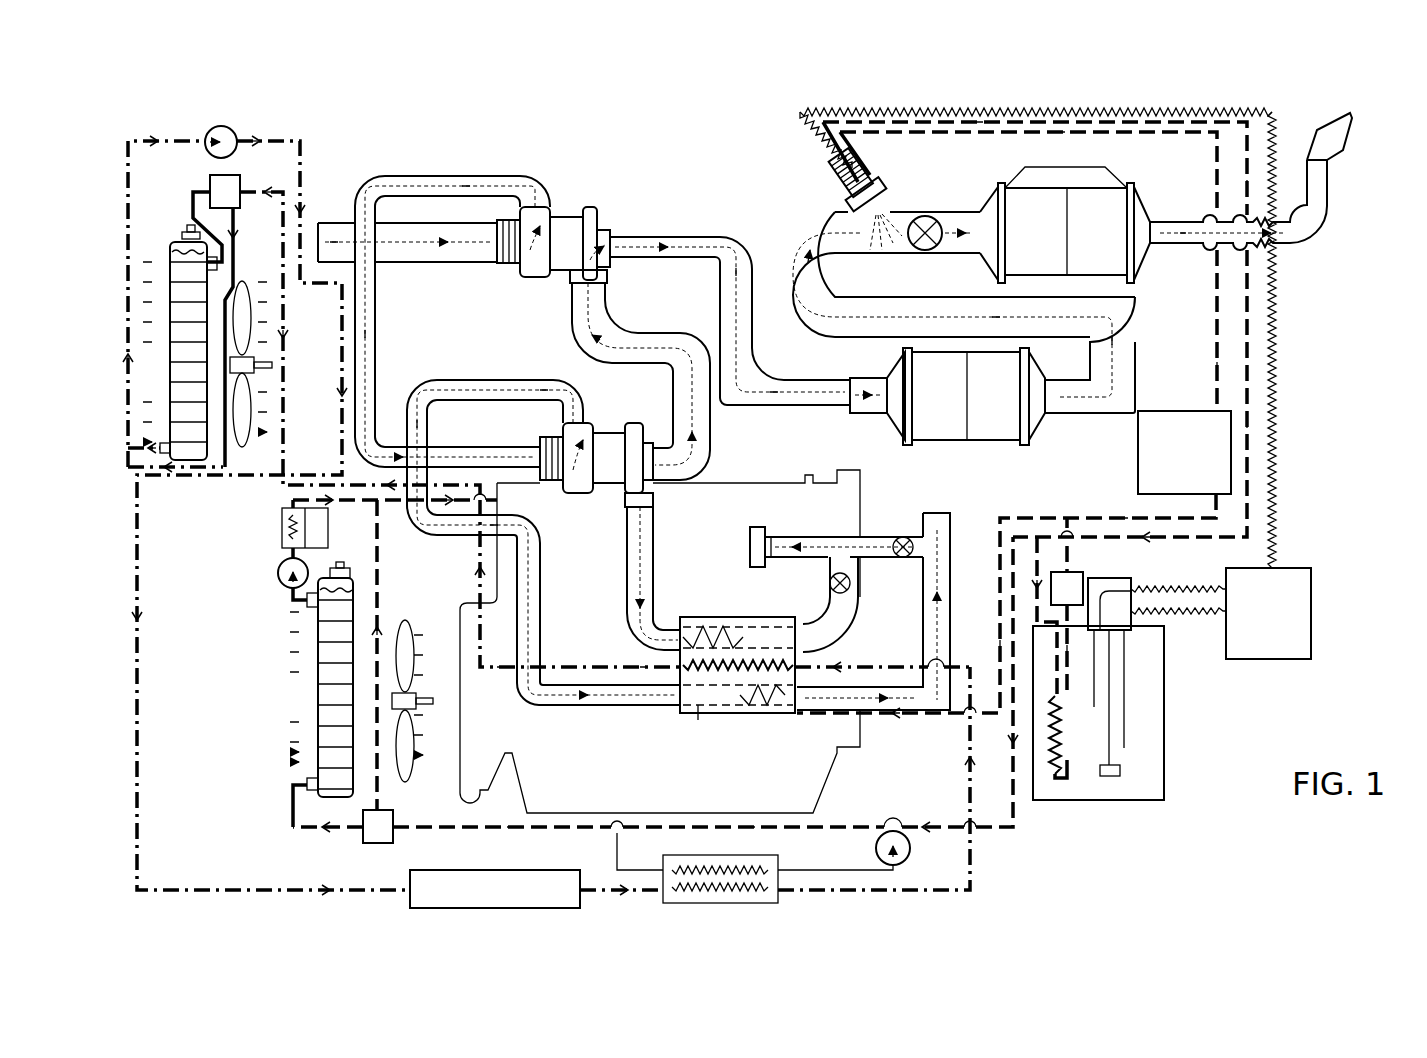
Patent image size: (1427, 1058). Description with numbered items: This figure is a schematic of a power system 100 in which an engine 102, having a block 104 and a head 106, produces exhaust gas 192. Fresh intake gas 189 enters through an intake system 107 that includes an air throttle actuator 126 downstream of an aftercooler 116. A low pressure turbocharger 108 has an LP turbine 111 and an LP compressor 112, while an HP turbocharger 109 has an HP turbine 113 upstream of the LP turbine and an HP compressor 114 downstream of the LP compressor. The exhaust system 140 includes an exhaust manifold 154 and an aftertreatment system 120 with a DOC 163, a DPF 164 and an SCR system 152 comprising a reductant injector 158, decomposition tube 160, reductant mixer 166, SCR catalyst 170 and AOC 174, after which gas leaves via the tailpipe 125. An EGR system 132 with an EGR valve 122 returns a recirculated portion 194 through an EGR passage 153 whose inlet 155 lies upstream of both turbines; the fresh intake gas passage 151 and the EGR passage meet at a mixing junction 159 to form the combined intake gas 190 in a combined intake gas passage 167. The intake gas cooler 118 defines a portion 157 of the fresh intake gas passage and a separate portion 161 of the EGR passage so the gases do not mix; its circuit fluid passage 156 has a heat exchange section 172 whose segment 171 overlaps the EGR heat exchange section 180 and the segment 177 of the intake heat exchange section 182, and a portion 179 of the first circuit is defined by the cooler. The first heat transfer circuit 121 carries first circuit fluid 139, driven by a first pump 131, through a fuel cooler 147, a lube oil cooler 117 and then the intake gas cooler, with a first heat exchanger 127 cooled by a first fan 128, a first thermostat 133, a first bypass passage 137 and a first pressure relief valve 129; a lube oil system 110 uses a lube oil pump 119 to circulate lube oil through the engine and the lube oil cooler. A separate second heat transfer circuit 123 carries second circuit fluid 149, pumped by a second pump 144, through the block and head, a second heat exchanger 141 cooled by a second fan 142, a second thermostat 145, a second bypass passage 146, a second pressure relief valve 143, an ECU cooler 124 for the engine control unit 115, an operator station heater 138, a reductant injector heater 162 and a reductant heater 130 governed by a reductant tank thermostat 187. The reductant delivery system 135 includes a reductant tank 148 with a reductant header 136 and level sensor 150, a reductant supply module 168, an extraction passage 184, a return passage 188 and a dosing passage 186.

The power system 100 is at (995, 860).
The engine 102 is at (785, 458).
The block 104 is at (870, 615).
The head 106 is at (860, 485).
The intake system 107 is at (378, 165).
The turbocharger 108 is at (570, 205).
The HP turbocharger 109 is at (610, 420).
The lube oil system 110 is at (583, 847).
The LP turbine 111 is at (600, 210).
The LP compressor 112 is at (538, 205).
The HP turbine 113 is at (636, 425).
The HP compressor 114 is at (580, 495).
The engine control unit 115 is at (328, 528).
The aftercooler 116 is at (950, 650).
The lube oil cooler 117 is at (765, 856).
The intake gas cooler 118 is at (750, 617).
The lube oil pump 119 is at (905, 858).
The aftertreatment system 120 is at (1150, 288).
The first heat transfer circuit 121 is at (178, 128).
The EGR valve 122 is at (830, 590).
The second heat transfer circuit 123 is at (298, 745).
The ECU cooler 124 is at (282, 520).
The tailpipe 125 is at (1340, 160).
The air throttle actuator 126 is at (903, 537).
The first heat exchanger 127 is at (185, 367).
The first fan 128 is at (248, 285).
The first pressure relief valve 129 is at (205, 242).
The reductant heater 130 is at (1055, 778).
The first pump 131 is at (228, 127).
The EGR system 132 is at (612, 610).
The first thermostat 133 is at (242, 182).
The reductant delivery system 135 is at (1248, 792).
The reductant header 136 is at (1112, 578).
The first bypass passage 137 is at (232, 255).
The operator station heater 138 is at (1138, 465).
The first circuit fluid 139 is at (183, 236).
The exhaust system 140 is at (762, 240).
The second heat exchanger 141 is at (318, 703).
The second fan 142 is at (405, 620).
The second pressure relief valve 143 is at (342, 568).
The second pump 144 is at (278, 572).
The second thermostat 145 is at (363, 840).
The second bypass passage 146 is at (380, 805).
The fuel cooler 147 is at (492, 870).
The reductant tank 148 is at (1164, 725).
The second circuit fluid 149 is at (330, 600).
The level sensor 150 is at (1115, 780).
The fresh intake gas passage 151 is at (548, 605).
The SCR system 152 is at (1335, 102).
The EGR passage 153 is at (610, 568).
The exhaust manifold 154 is at (655, 497).
The inlet 155 is at (655, 520).
The circuit fluid passage 156 is at (685, 668).
The portion of fresh intake gas passage 157 is at (700, 713).
The reductant injector 158 is at (885, 182).
The mixing junction 159 is at (838, 537).
The decomposition tube 160 is at (895, 253).
The portion of EGR passage 161 is at (735, 617).
The reductant injector heater 162 is at (870, 168).
The diesel oxidation catalyst 163 is at (945, 440).
The diesel particulate filter 164 is at (1000, 440).
The reductant mixer 166 is at (933, 217).
The combined intake gas passage 167 is at (760, 527).
The reductant supply module 168 is at (1280, 660).
The SCR catalyst 170 is at (1055, 222).
The segment of heat exchange section 171 is at (778, 690).
The heat exchange section 172 is at (680, 662).
The ammonia oxidation catalyst 174 is at (1117, 222).
The segment of intake heat exchange section 177 is at (740, 660).
The portion of first circuit 179 is at (845, 660).
The EGR heat exchange section 180 is at (697, 617).
The intake heat exchange section 182 is at (795, 700).
The reductant extraction passage 184 is at (1185, 613).
The reductant dosing passage 186 is at (1278, 478).
The reductant tank thermostat 187 is at (1072, 578).
The reductant return passage 188 is at (1175, 589).
The fresh intake gas arrow 189 is at (330, 233).
The combined intake gas arrow 190 is at (792, 545).
The exhaust gas arrow 192 is at (680, 470).
The recirculated exhaust gas arrow 194 is at (632, 612).